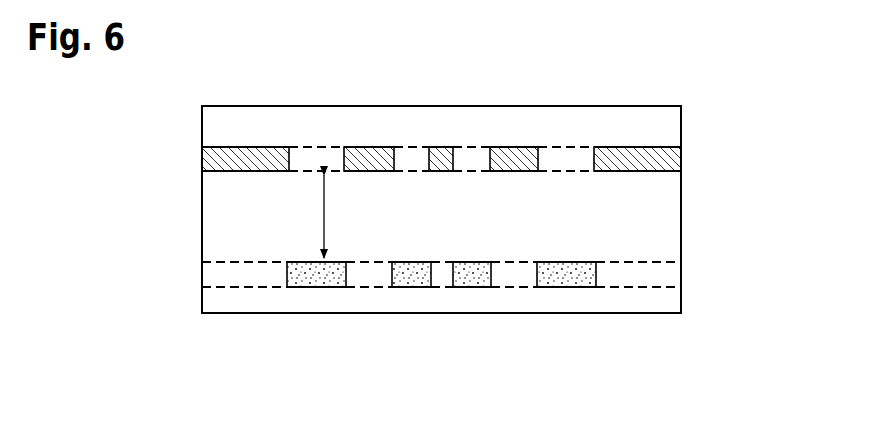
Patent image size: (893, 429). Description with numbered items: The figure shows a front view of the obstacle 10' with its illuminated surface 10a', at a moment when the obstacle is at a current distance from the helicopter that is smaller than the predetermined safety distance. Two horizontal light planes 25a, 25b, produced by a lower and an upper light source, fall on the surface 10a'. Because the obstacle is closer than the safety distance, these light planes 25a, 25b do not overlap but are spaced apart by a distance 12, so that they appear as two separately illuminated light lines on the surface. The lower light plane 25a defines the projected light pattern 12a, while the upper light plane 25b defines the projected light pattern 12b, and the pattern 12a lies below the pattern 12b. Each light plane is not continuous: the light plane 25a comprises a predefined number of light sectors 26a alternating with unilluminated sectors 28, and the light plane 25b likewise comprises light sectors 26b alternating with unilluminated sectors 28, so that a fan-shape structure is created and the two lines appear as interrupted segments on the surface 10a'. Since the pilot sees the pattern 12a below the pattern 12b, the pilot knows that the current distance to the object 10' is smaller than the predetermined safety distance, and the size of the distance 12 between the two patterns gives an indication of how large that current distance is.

The obstacle 10' is at (460, 169).
The illuminated surface 10a' is at (441, 78).
The distance 12 is at (324, 218).
The light pattern 12a is at (587, 287).
The light pattern 12b is at (643, 146).
The light plane 25a is at (684, 275).
The light plane 25b is at (684, 160).
The light sectors 26a is at (320, 287).
The light sectors 26b is at (270, 152).
The unilluminated sectors 28 is at (323, 153).